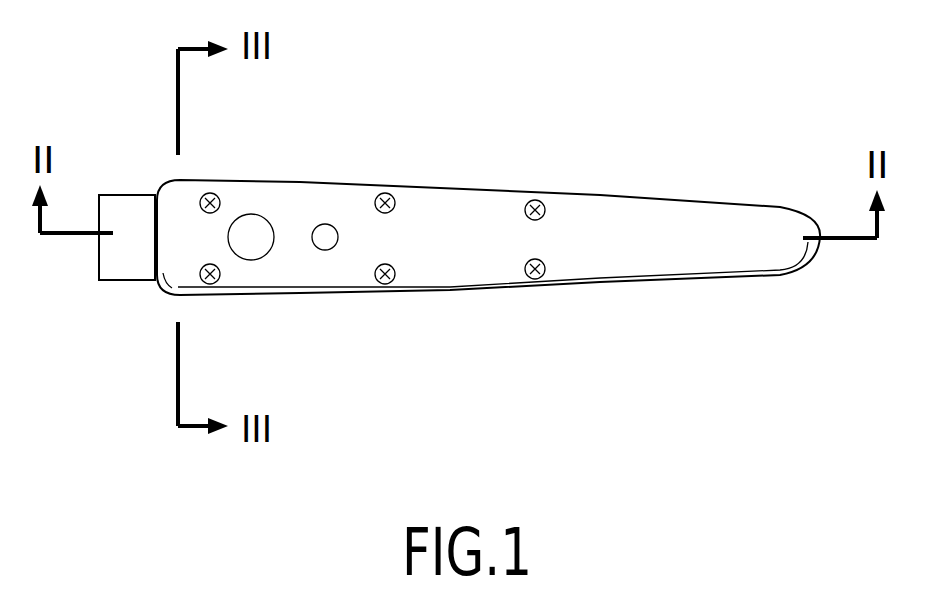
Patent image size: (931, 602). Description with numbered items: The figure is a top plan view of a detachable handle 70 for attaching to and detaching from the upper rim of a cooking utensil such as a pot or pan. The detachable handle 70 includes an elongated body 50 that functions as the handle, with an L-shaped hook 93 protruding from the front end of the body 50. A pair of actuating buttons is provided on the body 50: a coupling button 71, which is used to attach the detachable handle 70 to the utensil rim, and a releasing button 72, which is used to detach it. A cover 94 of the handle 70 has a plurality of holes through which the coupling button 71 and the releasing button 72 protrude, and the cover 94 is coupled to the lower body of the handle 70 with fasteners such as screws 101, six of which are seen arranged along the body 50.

The elongated body 50 is at (448, 204).
The detachable handle 70 is at (591, 330).
The coupling button 71 is at (250, 220).
The releasing button 72 is at (324, 224).
The L-shaped hook 93 is at (113, 215).
The cover 94 is at (488, 215).
The screws 101 is at (199, 272).